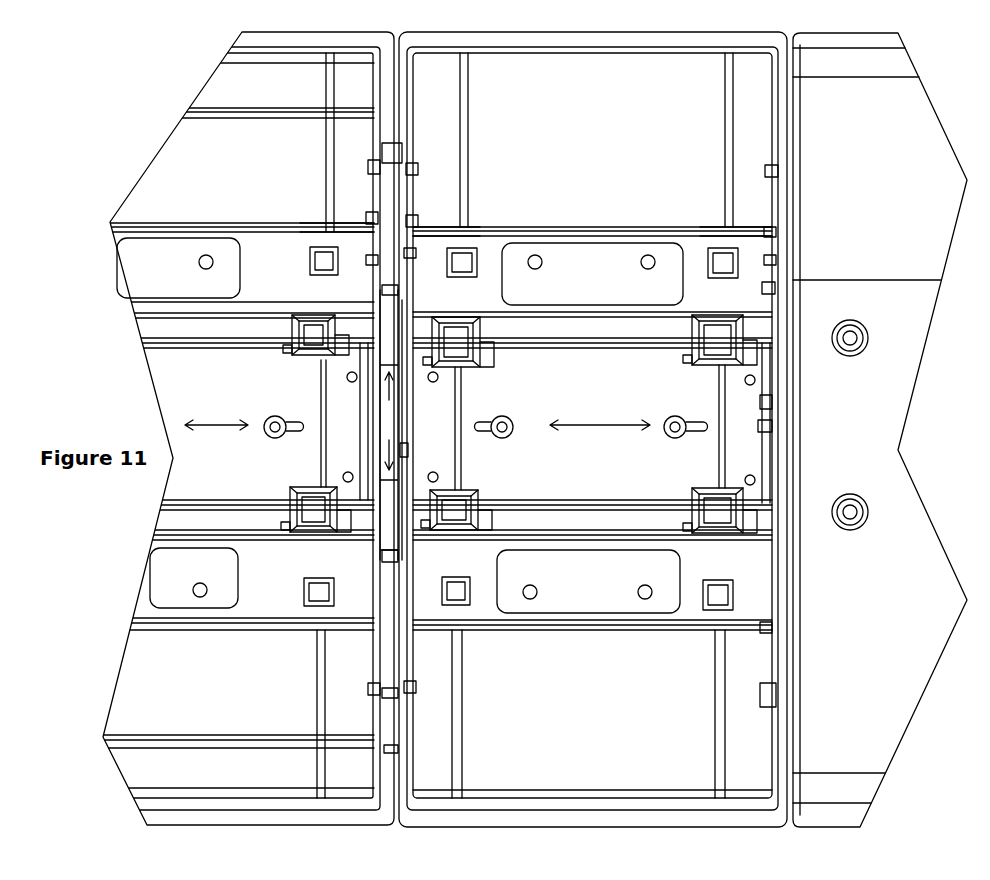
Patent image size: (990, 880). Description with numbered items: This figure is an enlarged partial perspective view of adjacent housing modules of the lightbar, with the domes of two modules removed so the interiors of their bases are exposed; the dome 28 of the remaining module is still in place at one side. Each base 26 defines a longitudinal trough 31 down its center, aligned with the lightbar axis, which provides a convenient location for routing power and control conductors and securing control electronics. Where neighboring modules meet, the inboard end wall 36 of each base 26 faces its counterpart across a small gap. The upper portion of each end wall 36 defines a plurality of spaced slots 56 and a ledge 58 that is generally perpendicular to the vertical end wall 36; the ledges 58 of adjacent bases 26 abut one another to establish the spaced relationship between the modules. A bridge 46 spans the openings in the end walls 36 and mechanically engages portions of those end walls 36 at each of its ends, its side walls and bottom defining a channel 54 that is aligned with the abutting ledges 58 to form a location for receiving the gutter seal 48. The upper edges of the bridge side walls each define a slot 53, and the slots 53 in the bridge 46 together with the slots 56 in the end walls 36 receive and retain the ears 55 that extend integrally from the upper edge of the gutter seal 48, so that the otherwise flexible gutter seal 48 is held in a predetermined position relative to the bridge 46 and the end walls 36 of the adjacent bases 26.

The base 26 is at (128, 695).
The dome 28 is at (852, 190).
The longitudinal trough 31 is at (208, 420).
The inboard end wall 36 is at (373, 260).
The bridge 46 is at (767, 403).
The gutter seal 48 is at (405, 450).
The slot 53 is at (367, 422).
The channel 54 is at (405, 422).
The ear 55 is at (770, 170).
The slot 56 is at (370, 217).
The ledge 58 is at (357, 490).